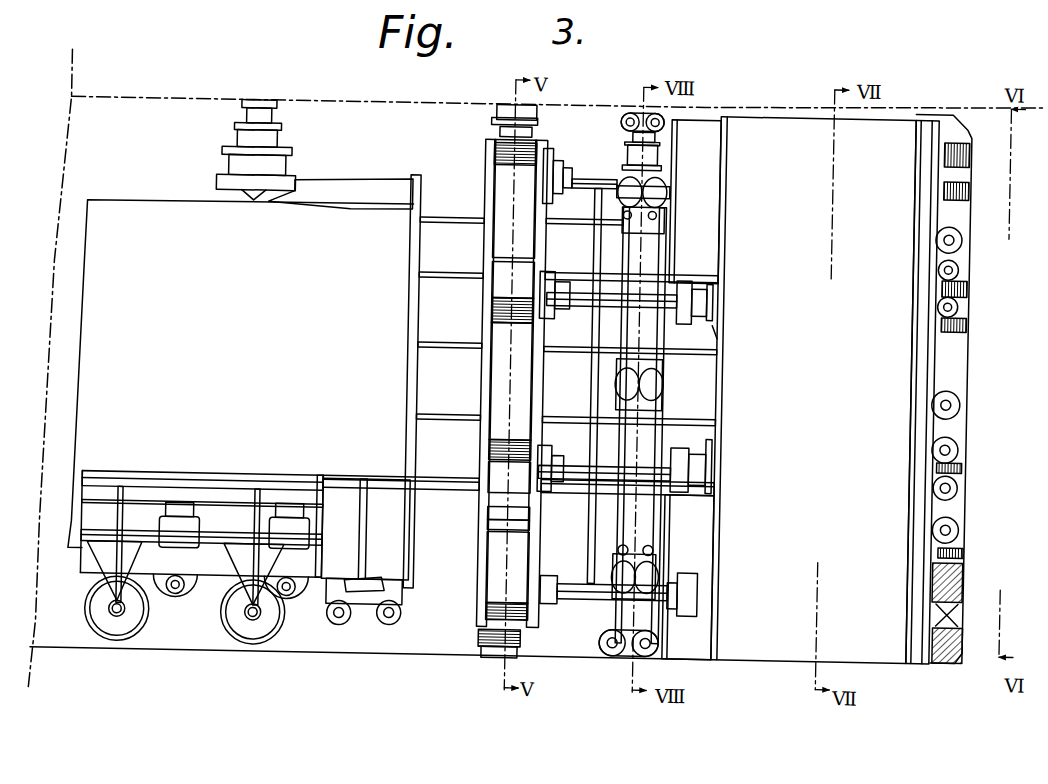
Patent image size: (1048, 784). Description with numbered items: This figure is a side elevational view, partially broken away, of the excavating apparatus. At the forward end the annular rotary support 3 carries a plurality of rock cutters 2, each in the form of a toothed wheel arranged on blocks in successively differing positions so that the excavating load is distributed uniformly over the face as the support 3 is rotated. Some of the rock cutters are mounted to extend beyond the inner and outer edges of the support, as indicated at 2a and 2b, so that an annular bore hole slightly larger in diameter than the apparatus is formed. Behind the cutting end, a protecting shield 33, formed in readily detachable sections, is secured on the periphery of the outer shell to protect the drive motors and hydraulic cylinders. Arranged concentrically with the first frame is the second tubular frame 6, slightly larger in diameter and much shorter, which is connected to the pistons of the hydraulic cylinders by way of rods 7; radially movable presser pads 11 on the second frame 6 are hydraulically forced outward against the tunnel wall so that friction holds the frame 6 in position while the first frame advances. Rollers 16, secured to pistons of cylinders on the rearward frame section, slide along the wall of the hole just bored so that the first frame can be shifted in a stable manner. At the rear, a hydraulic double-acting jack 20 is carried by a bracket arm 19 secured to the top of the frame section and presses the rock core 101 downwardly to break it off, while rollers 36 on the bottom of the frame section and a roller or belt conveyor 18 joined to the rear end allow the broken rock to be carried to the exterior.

The rock cutters 2 is at (966, 351).
The rock cutter extending beyond inner edge 2a is at (966, 593).
The rock cutter extending beyond outer edge 2b is at (965, 658).
The annular rotary support 3 is at (939, 370).
The second tubular frame 6 is at (528, 121).
The rods 7 is at (625, 401).
The presser pads 11 is at (492, 385).
The rollers 16 is at (653, 385).
The roller or belt conveyor 18 is at (201, 541).
The bracket arm 19 is at (340, 172).
The hydraulic double-acting jack 20 is at (237, 149).
The protecting shield 33 is at (789, 367).
The rollers 36 is at (364, 588).
The rock core 101 is at (241, 359).